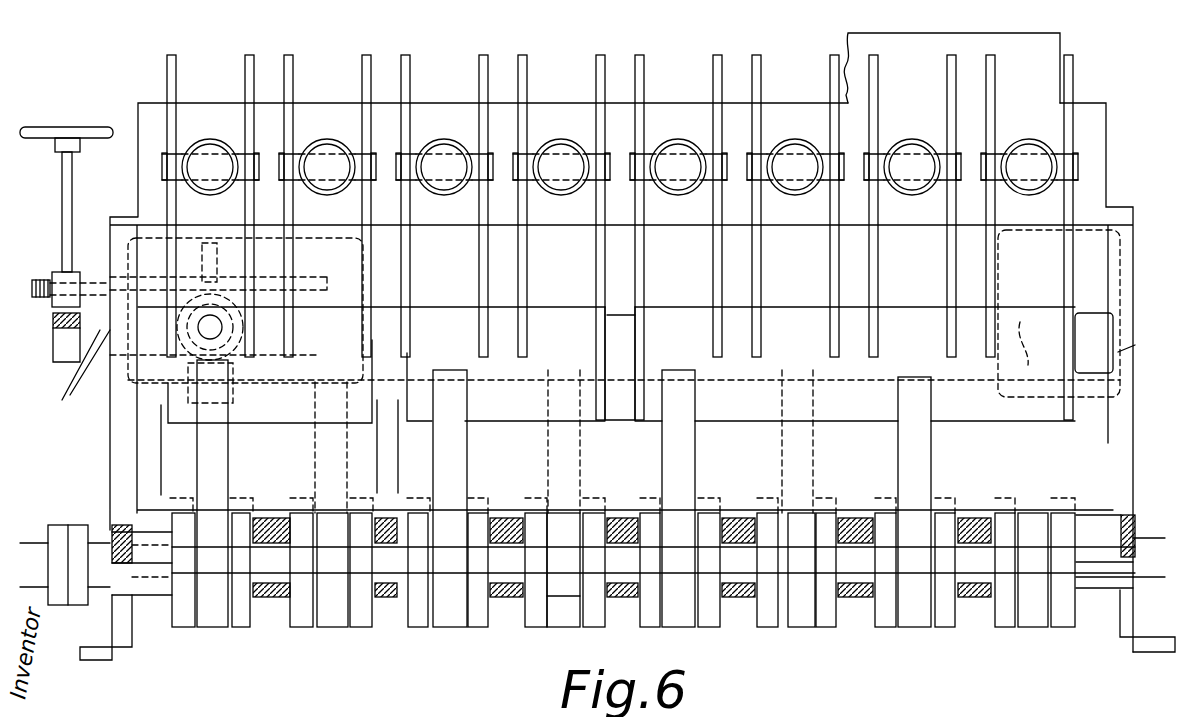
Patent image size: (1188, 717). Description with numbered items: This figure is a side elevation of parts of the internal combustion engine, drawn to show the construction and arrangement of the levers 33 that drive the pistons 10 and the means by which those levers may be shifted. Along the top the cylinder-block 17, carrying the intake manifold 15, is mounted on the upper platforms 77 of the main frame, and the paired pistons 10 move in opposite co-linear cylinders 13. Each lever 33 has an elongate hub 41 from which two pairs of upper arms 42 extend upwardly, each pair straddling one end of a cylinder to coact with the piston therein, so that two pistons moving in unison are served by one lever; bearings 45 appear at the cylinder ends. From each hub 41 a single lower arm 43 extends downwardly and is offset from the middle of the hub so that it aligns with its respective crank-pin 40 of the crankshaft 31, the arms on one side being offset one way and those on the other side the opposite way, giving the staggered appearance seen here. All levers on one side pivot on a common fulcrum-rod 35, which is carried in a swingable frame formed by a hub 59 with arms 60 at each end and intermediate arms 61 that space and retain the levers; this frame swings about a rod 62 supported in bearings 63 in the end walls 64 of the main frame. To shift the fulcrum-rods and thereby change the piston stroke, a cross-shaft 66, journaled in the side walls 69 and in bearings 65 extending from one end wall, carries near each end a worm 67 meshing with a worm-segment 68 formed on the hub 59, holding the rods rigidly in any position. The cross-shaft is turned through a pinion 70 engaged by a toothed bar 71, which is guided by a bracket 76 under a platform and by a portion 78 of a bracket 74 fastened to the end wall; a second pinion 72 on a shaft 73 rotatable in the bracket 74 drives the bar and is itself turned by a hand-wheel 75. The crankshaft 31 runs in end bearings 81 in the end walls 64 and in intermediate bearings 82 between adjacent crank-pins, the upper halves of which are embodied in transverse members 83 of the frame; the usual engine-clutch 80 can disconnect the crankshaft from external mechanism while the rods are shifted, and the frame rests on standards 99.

The pistons 10 is at (330, 150).
The cylinders 13 is at (440, 140).
The intake manifold 15 is at (915, 40).
The cylinder-block 17 is at (690, 75).
The crankshaft 31 is at (97, 530).
The levers 33 is at (277, 425).
The fulcrum-rod 35 is at (1075, 313).
The crank-pins 40 is at (680, 640).
The hub 41 is at (606, 320).
The upper arms 42 is at (245, 70).
The lower arm 43 is at (228, 462).
The bearing 45 is at (280, 160).
The hub 59 is at (285, 385).
The arms 60 is at (150, 450).
The intermediate arms 61 is at (382, 325).
The rod 62 is at (1120, 420).
The bearings 63 is at (115, 455).
The end walls 64 is at (607, 373).
The bearings 65 is at (233, 338).
The cross-shaft 66 is at (243, 322).
The worm 67 is at (238, 355).
The worm-segment 68 is at (233, 400).
The side walls 69 is at (300, 350).
The pinion 70 is at (255, 298).
The bar 71 is at (200, 275).
The second pinion 72 is at (42, 268).
The shaft 73 is at (62, 230).
The bracket 74 is at (60, 343).
The hand-wheel 75 is at (42, 127).
The bracket 76 is at (218, 250).
The upper platforms 77 is at (308, 238).
The portion 78 is at (80, 268).
The engine-clutch 80 is at (62, 525).
The end bearings 81 is at (155, 563).
The intermediate bearing 82 is at (278, 585).
The transverse members 83 is at (270, 528).
The standards 99 is at (132, 652).